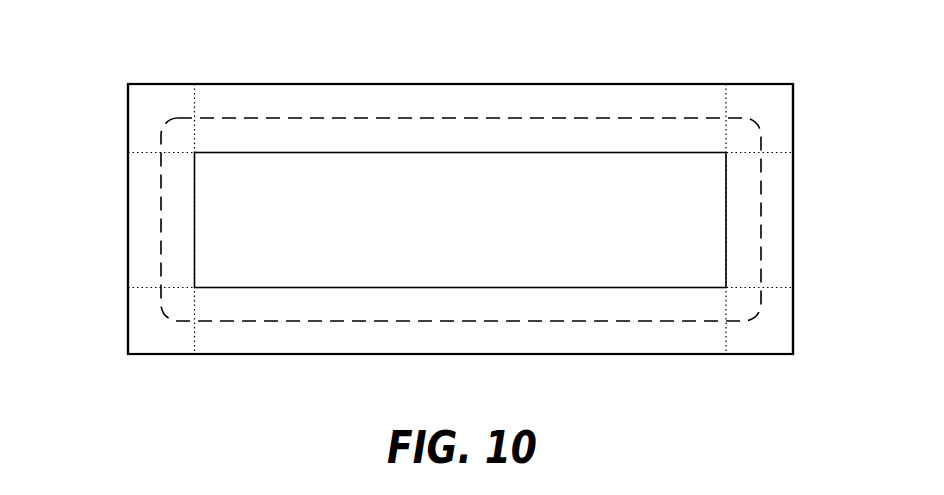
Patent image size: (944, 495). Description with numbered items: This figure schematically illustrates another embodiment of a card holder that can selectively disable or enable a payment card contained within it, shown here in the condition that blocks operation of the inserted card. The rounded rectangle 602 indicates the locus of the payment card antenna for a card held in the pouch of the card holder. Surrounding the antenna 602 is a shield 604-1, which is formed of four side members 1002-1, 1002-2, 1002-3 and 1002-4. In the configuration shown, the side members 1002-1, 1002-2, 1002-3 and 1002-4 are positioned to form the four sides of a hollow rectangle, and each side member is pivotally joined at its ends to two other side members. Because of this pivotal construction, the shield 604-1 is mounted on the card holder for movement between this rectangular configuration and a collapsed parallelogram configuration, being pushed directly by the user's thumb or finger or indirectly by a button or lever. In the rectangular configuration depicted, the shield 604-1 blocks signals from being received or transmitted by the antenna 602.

The shield 604-1 is at (708, 67).
The payment card antenna 602 is at (659, 118).
The side member 1002-1 is at (419, 84).
The side member 1002-2 is at (793, 219).
The side member 1002-3 is at (600, 354).
The side member 1002-4 is at (128, 237).